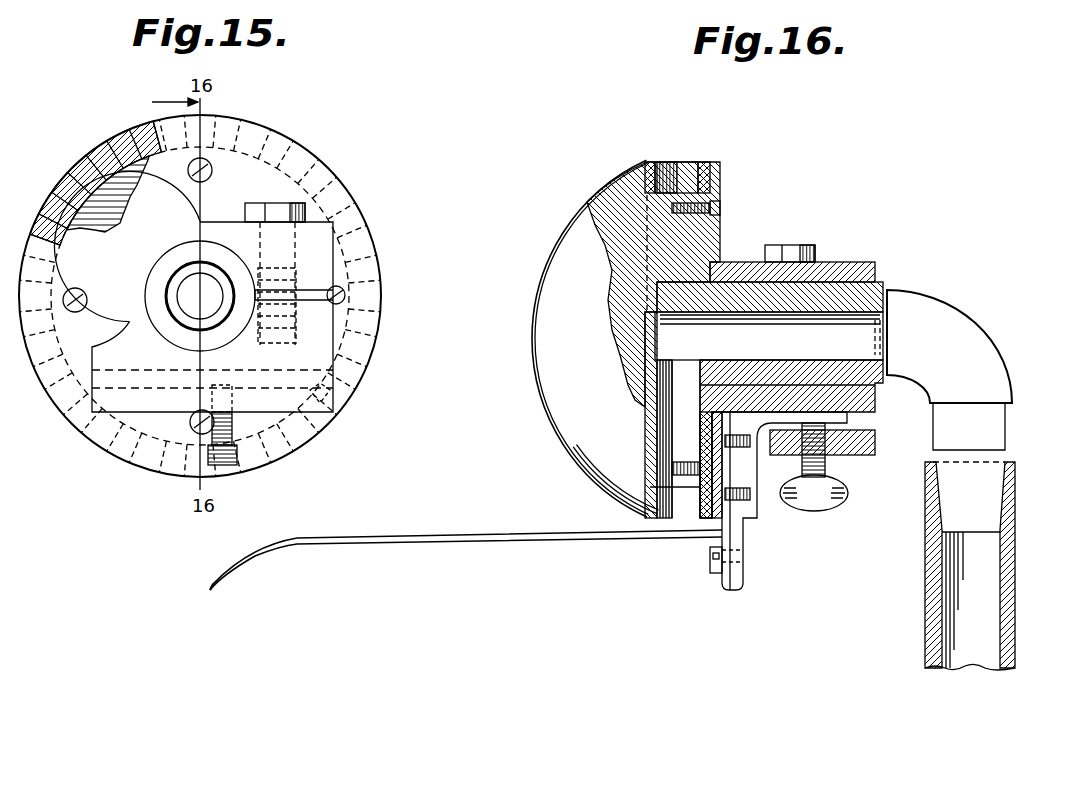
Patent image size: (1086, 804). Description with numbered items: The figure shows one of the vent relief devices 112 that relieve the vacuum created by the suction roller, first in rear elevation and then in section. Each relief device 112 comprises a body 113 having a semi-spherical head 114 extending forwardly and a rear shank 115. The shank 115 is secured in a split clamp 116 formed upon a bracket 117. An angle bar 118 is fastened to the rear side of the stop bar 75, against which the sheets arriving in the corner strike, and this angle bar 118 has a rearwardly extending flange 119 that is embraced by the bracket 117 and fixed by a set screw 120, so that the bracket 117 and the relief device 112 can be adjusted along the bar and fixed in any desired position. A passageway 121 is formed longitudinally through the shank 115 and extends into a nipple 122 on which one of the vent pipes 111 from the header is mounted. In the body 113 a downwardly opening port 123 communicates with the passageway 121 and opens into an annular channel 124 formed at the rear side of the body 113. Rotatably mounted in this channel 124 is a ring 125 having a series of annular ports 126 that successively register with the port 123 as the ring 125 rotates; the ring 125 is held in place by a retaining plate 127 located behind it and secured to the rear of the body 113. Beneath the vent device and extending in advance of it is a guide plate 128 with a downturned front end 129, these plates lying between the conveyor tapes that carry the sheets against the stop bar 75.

In FIG. 16, the stop bar 75 is at (745, 580).
In FIG. 16, the vent conduit 111 is at (928, 590).
In FIG. 16, the vent relief device 112 is at (840, 232).
In FIG. 16, the body 113 is at (688, 250).
In FIG. 16, the semi-spherical head 114 is at (549, 292).
In FIG. 16, the rear shank 115 is at (880, 280).
In FIG. 16, the split clamp 116 is at (860, 262).
In FIG. 15, the bracket 117 is at (318, 370).
In FIG. 16, the bracket 117 is at (876, 398).
In FIG. 16, the angle bar 118 is at (747, 512).
In FIG. 16, the rearwardly extending flange 119 is at (837, 417).
In FIG. 16, the set screw 120 is at (840, 462).
In FIG. 16, the passageway 121 is at (769, 336).
In FIG. 16, the nipple 122 is at (1005, 425).
In FIG. 16, the port 123 is at (668, 457).
In FIG. 16, the annular channel 124 is at (643, 504).
In FIG. 16, the ring 125 is at (657, 522).
In FIG. 16, the annular ports 126 is at (683, 508).
In FIG. 16, the retaining plate 127 is at (715, 174).
In FIG. 16, the guide plate 128 is at (410, 537).
In FIG. 16, the downturned front end 129 is at (243, 557).